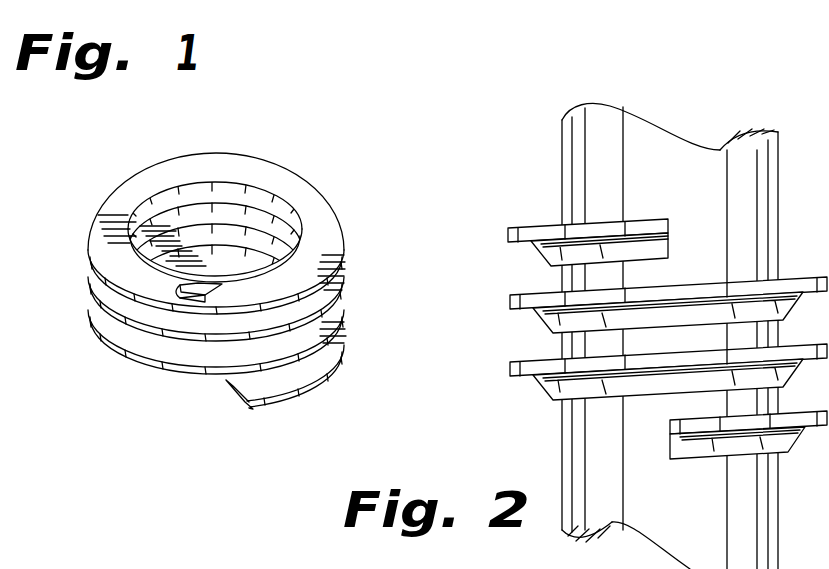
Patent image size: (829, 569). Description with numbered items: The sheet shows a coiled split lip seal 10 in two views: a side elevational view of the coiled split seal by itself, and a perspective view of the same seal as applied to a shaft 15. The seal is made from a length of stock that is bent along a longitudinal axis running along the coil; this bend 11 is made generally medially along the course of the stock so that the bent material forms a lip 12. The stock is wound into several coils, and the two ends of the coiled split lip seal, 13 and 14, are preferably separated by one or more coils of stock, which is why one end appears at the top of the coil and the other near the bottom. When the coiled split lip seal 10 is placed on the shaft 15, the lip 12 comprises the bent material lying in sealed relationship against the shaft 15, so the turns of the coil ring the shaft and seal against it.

In FIG. 1, the coiled split lip seal 10 is at (250, 285).
In FIG. 2, the coiled split lip seal 10 is at (487, 289).
In FIG. 1, the bend 11 is at (223, 380).
In FIG. 1, the lip 12 is at (214, 292).
In FIG. 1, the end of the coiled split lip seal 13 is at (177, 292).
In FIG. 1, the end of the coiled split lip seal 14 is at (237, 394).
In FIG. 2, the shaft 15 is at (568, 165).